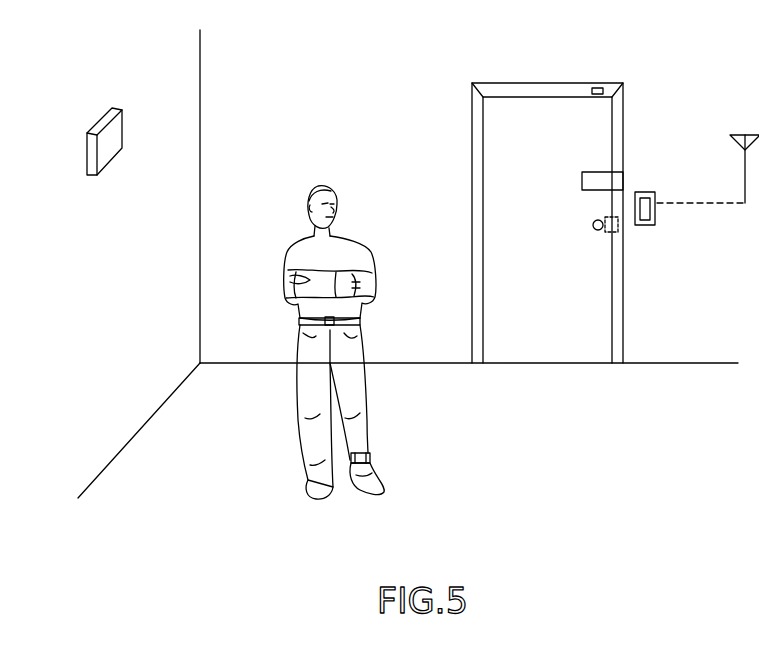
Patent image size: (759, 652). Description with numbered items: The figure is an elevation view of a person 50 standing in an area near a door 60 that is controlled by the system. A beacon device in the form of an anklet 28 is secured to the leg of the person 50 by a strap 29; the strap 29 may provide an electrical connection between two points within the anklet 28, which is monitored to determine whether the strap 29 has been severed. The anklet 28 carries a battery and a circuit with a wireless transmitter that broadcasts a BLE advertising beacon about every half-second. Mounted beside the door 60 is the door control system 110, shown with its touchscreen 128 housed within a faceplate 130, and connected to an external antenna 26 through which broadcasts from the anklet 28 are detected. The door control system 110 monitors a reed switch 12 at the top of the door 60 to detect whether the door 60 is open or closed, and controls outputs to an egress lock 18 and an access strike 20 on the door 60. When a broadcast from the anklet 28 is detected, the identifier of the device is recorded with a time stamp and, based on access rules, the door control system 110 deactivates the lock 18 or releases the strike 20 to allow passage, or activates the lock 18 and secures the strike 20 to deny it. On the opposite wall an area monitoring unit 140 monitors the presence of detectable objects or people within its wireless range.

The reed switch 12 is at (597, 88).
The egress lock 18 is at (624, 177).
The access strike 20 is at (618, 222).
The external antenna 26 is at (743, 162).
The anklet 28 is at (372, 460).
The strap 29 is at (351, 463).
The person 50 is at (345, 237).
The door 60 is at (597, 122).
The door control system 110 is at (657, 197).
The touchscreen 128 is at (647, 207).
The faceplate 130 is at (648, 222).
The area monitoring unit 140 is at (122, 125).